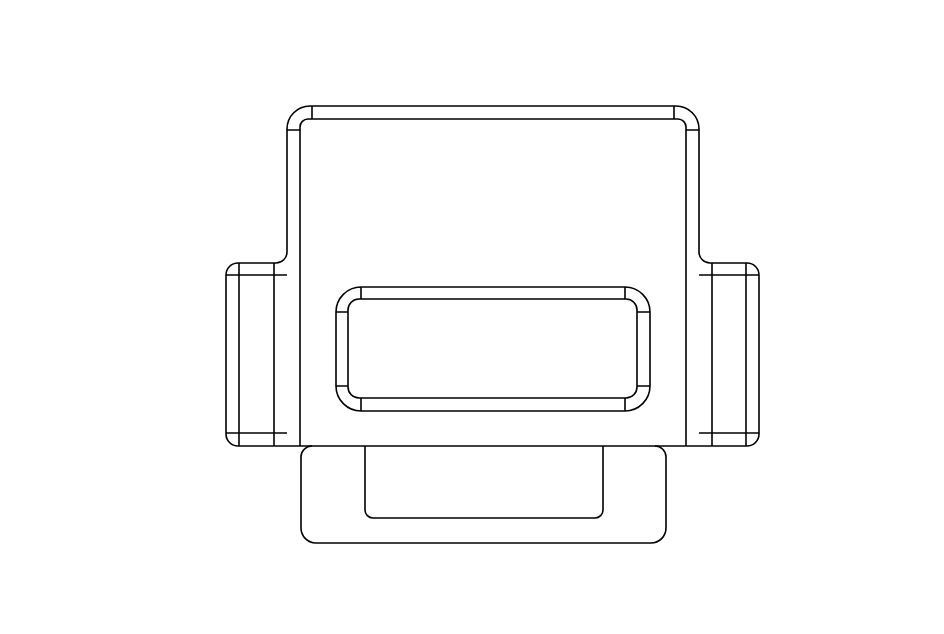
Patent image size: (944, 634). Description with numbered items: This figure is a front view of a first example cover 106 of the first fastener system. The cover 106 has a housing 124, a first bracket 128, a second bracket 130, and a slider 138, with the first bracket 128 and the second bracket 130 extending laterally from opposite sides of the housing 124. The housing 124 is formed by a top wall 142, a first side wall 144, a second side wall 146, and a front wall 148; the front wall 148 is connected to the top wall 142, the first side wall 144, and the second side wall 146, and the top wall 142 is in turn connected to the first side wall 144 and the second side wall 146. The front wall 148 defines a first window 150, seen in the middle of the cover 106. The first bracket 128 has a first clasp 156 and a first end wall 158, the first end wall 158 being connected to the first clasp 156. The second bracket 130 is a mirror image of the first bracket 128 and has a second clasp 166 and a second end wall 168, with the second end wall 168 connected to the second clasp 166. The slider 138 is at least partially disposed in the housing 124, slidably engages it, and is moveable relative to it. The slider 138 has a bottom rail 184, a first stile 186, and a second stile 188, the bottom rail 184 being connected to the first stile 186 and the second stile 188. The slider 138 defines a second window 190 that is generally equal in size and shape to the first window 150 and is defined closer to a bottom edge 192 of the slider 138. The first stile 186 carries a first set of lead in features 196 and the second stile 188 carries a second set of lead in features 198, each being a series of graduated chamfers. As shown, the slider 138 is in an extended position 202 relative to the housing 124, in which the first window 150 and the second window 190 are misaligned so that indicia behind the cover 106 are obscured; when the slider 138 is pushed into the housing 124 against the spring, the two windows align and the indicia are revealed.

The cover 106 is at (191, 42).
The extended position 202 is at (214, 82).
The housing 124 is at (357, 106).
The top wall 142 is at (499, 108).
The first side wall 144 is at (295, 188).
The second side wall 146 is at (692, 190).
The front wall 148 is at (613, 183).
The first bracket 128 is at (260, 380).
The first clasp 156 is at (250, 323).
The first end wall 158 is at (240, 443).
The second bracket 130 is at (737, 309).
The second clasp 166 is at (723, 343).
The second end wall 168 is at (738, 437).
The first window 150 is at (563, 355).
The slider 138 is at (507, 535).
The first set of lead in features 196 is at (312, 448).
The second set of lead in features 198 is at (655, 448).
The first stile 186 is at (323, 518).
The bottom rail 184 is at (435, 530).
The bottom edge 192 is at (365, 543).
The second stile 188 is at (655, 527).
The second window 190 is at (566, 508).